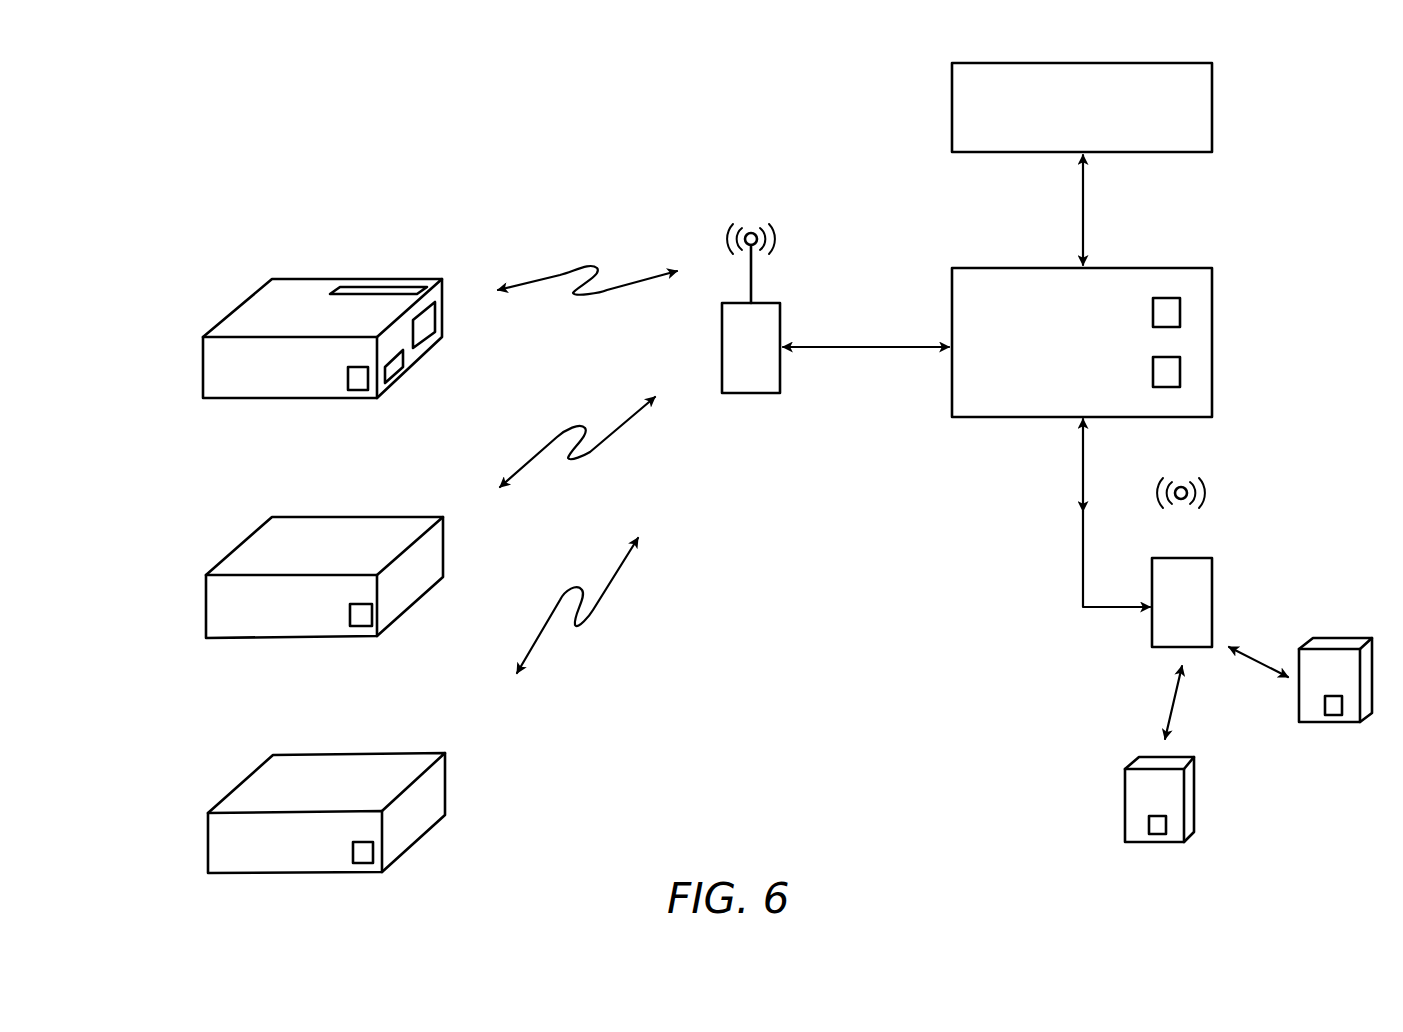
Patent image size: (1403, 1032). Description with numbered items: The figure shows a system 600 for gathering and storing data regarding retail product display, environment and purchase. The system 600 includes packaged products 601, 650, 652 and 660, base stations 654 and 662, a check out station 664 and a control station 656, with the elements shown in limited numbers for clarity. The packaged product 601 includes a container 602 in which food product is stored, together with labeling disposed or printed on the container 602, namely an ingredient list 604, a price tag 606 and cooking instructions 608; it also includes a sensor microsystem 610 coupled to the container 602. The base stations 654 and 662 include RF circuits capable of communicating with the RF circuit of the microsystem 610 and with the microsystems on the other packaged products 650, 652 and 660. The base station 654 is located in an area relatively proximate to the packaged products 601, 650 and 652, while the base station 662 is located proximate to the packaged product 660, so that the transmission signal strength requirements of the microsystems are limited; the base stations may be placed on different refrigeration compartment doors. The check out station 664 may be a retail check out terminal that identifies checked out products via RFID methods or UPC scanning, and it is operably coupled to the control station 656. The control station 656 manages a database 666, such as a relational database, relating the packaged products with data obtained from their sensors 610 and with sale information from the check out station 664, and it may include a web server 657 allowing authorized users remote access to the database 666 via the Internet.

The system 600 is at (737, 138).
The packaged product 601 is at (314, 336).
The container 602 is at (288, 288).
The ingredient list 604 is at (425, 332).
The price tag 606 is at (395, 363).
The cooking instructions 608 is at (385, 288).
The sensor microsystem 610 is at (360, 382).
The packaged product 650 is at (197, 540).
The packaged product 652 is at (198, 775).
The base station 654 is at (780, 317).
The control station 656 is at (1139, 354).
The web server 657 is at (1180, 312).
The packaged product 660 is at (1196, 799).
The base station 662 is at (1212, 572).
The check out station 664 is at (1212, 98).
The database 666 is at (1180, 372).